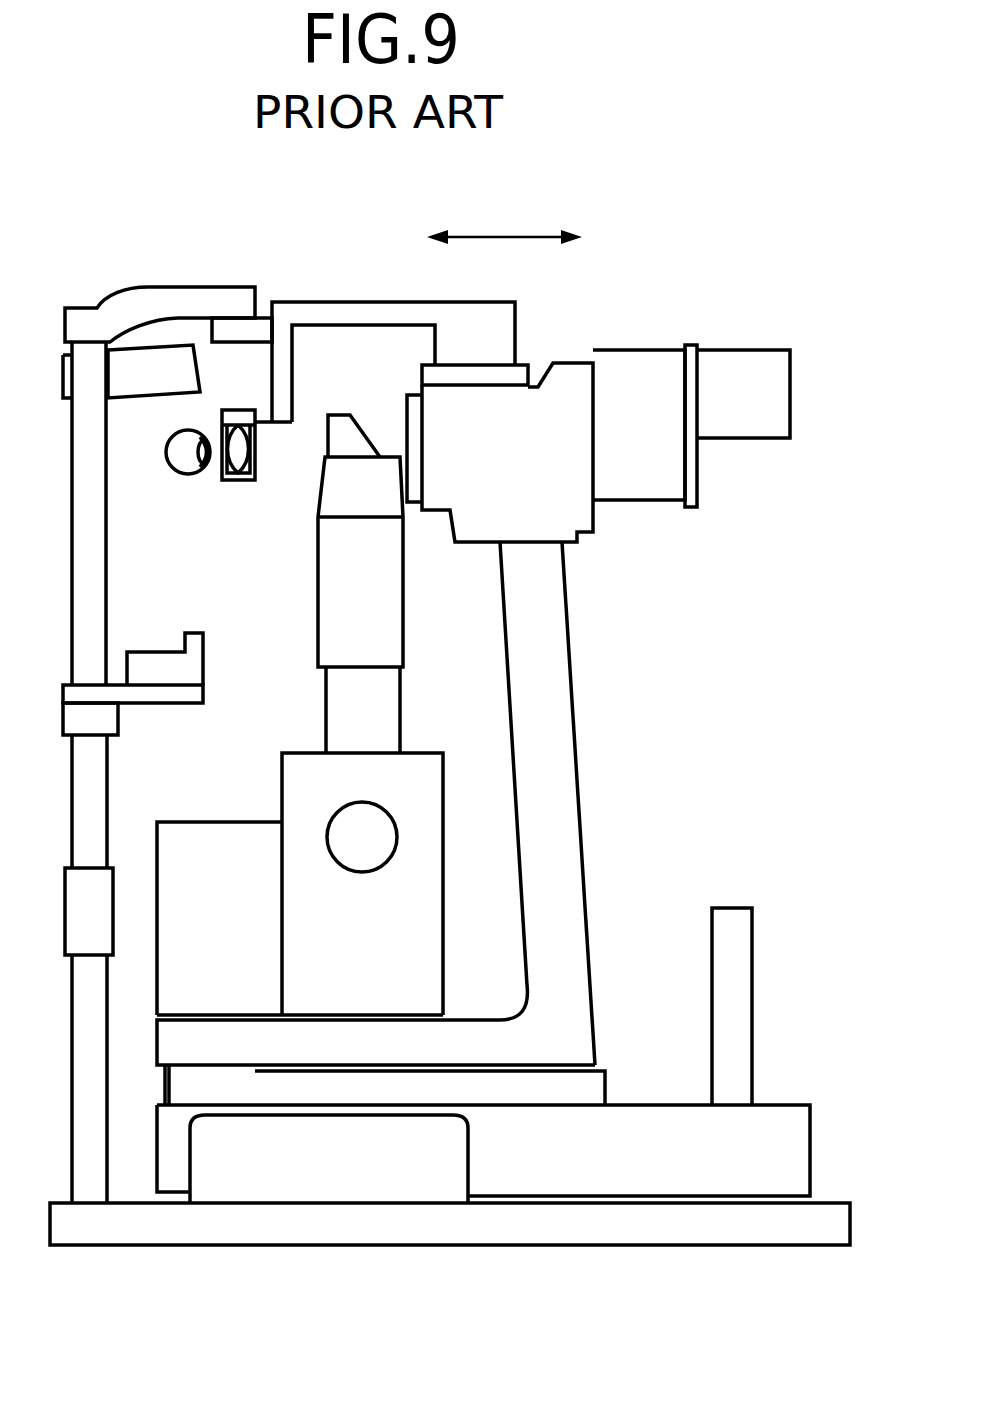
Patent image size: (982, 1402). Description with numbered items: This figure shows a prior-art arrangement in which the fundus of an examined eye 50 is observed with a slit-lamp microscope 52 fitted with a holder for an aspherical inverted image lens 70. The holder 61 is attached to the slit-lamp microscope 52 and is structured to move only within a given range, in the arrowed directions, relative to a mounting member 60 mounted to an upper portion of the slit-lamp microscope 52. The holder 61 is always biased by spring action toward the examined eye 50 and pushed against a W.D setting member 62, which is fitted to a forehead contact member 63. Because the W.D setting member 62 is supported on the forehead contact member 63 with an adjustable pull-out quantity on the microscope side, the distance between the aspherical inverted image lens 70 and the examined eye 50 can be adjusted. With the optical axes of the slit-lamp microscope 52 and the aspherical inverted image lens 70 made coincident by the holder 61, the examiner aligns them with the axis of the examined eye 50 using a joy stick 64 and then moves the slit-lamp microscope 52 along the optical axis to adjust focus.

The examined eye 50 is at (190, 475).
The slit-lamp microscope 52 is at (550, 392).
The mounting member 60 is at (500, 377).
The holder 61 is at (369, 305).
The W.D setting member 62 is at (232, 330).
The forehead contact member 63 is at (167, 308).
The joy stick 64 is at (745, 990).
The aspherical inverted image lens 70 is at (242, 412).